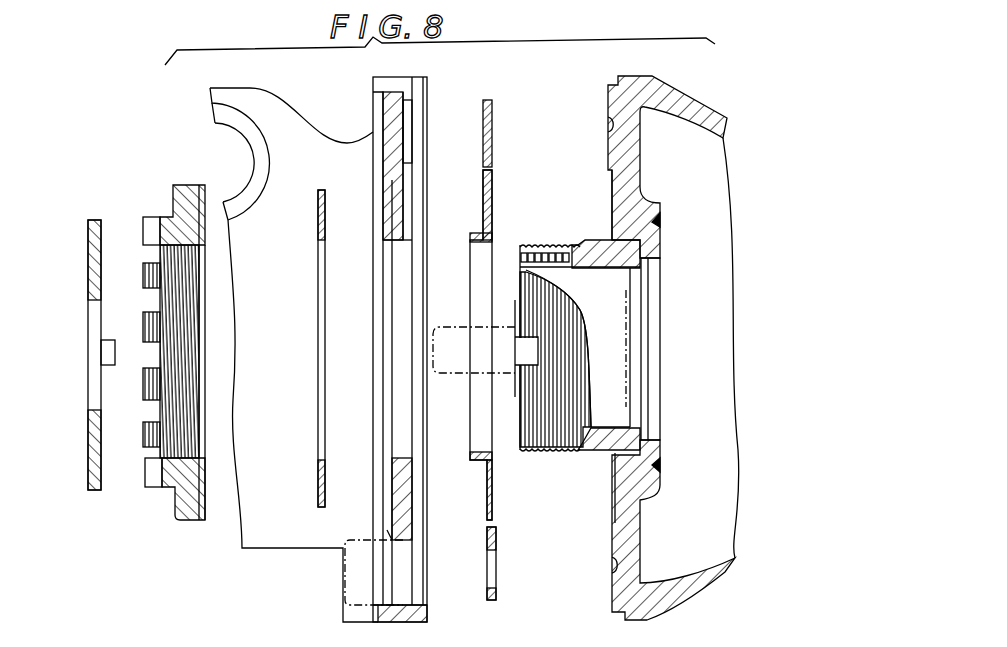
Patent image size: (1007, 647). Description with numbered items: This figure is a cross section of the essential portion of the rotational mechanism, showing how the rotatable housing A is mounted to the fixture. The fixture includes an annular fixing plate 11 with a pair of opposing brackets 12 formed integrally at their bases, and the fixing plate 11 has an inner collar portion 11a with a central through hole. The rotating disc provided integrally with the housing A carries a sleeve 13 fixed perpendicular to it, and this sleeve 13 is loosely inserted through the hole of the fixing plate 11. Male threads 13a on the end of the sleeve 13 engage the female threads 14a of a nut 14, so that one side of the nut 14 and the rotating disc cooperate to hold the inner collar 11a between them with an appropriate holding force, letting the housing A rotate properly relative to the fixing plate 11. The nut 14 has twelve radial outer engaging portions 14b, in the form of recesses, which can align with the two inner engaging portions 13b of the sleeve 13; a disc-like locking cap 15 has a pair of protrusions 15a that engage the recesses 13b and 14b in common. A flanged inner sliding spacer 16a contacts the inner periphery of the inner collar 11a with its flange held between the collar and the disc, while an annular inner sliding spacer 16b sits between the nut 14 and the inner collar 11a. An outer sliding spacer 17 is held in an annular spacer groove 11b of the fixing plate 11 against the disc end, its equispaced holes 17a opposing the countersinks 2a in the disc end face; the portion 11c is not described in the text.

The housing A is at (688, 92).
The countersinks 2a is at (607, 122).
The fixing plate 11 is at (393, 220).
The inner collar portion 11a is at (410, 453).
The annular spacer groove 11b is at (407, 107).
The hub end portion 11c is at (397, 605).
The brackets 12 is at (253, 88).
The sleeve 13 is at (593, 233).
The male threads 13a is at (548, 450).
The inner engaging portions 13b is at (530, 358).
The nut 14 is at (170, 185).
The female threads 14a is at (190, 416).
The outer engaging portions 14b is at (153, 232).
The locking cap 15 is at (87, 433).
The radial engaging means 15a is at (109, 366).
The inner sliding spacer 16a is at (467, 233).
The inner sliding spacer 16b is at (320, 500).
The outer sliding spacer 17 is at (496, 548).
The holes 17a is at (490, 130).